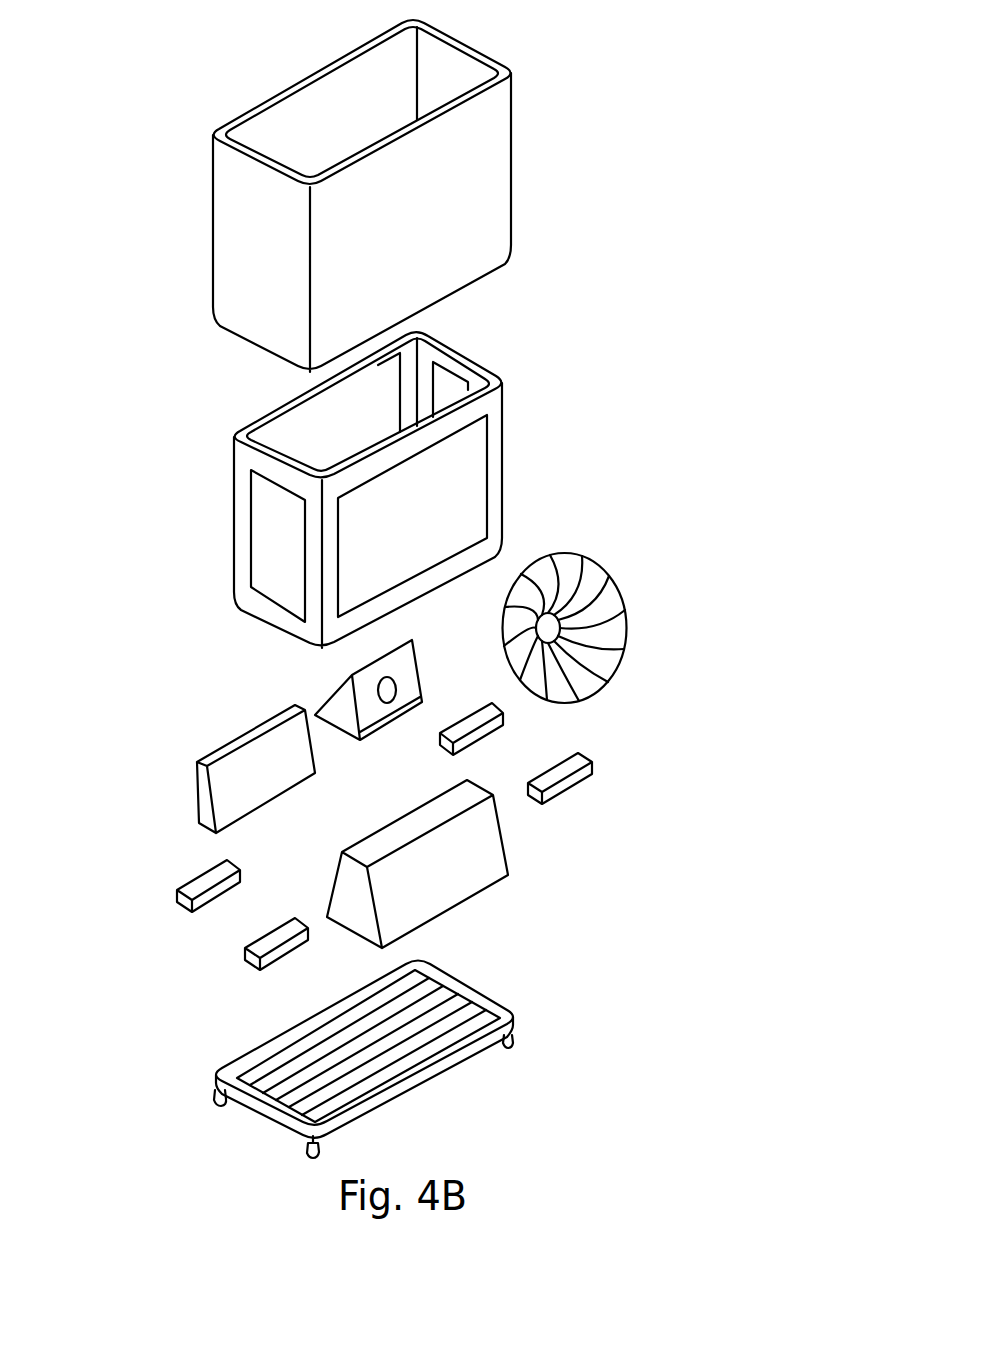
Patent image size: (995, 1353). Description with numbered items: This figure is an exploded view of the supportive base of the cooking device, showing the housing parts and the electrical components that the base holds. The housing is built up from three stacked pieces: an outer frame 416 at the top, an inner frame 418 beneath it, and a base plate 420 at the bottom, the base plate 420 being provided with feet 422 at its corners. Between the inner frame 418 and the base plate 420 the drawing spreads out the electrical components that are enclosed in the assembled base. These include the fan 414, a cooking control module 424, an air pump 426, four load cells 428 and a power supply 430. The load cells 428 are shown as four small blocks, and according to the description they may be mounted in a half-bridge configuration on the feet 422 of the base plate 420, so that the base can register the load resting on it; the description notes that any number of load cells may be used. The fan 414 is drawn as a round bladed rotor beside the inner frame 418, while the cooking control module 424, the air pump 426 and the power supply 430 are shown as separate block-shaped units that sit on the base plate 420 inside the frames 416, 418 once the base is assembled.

The fan 414 is at (605, 580).
The outer frame 416 is at (502, 112).
The inner frame 418 is at (505, 410).
The base plate 420 is at (490, 1006).
The feet 422 is at (215, 1097).
The cooking control module 424 is at (198, 780).
The air pump 426 is at (322, 702).
The load cells 428 is at (592, 767).
The power supply 430 is at (488, 872).